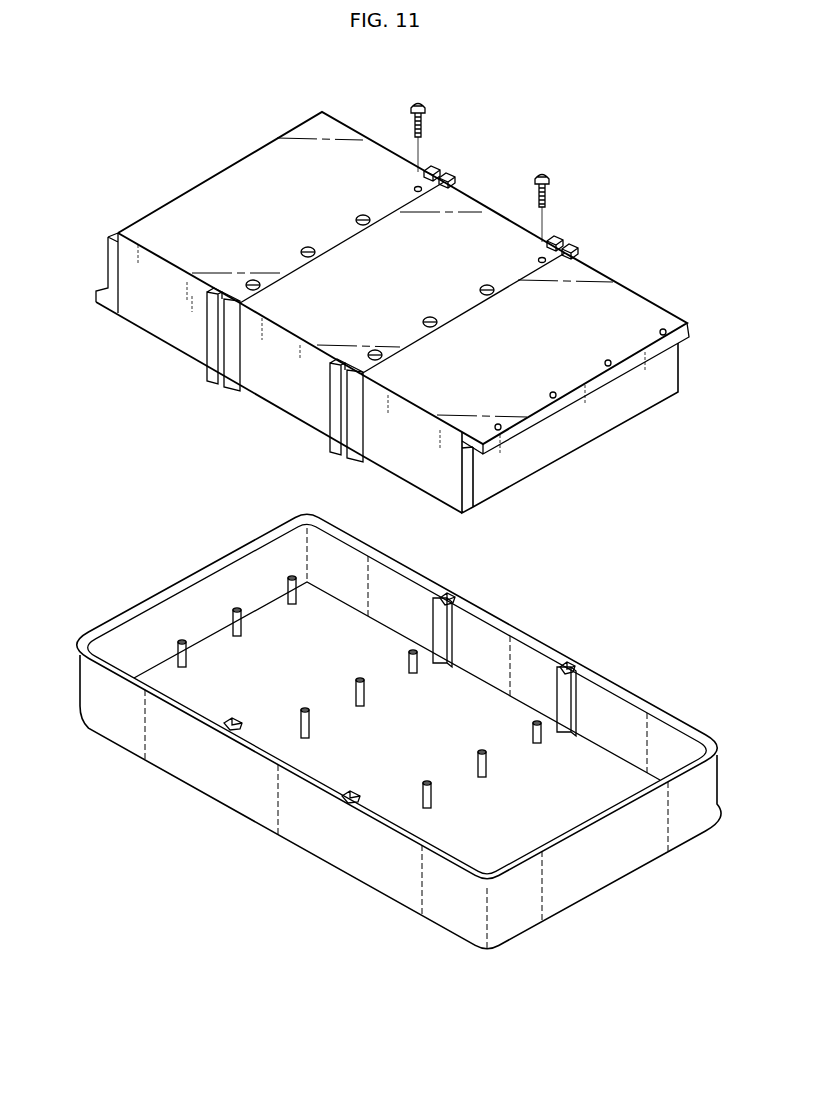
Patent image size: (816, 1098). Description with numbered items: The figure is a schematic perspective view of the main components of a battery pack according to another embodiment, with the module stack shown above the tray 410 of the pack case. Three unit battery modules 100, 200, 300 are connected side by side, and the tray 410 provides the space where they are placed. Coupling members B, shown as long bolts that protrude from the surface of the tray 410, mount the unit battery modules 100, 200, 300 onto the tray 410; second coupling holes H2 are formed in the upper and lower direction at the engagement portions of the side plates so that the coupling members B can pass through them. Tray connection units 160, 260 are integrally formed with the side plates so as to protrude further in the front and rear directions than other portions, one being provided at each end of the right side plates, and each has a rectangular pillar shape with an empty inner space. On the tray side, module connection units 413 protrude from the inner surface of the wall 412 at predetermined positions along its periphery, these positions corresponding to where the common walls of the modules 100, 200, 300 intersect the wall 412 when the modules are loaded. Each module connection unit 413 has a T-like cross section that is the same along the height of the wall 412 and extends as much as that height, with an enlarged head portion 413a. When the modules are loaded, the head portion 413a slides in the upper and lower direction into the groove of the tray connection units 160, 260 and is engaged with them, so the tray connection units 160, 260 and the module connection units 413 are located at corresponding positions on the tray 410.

The first unit battery module 100 is at (367, 119).
The second unit battery module 200 is at (489, 189).
The third unit battery module 300 is at (610, 264).
The tray connection unit 160 is at (448, 154).
The tray connection unit 260 is at (570, 226).
The coupling member B is at (419, 103).
The second coupling hole H2 is at (417, 187).
The tray 410 is at (149, 582).
The wall 412 is at (127, 720).
The module connection unit 413 is at (237, 714).
The head portion 413a is at (446, 628).